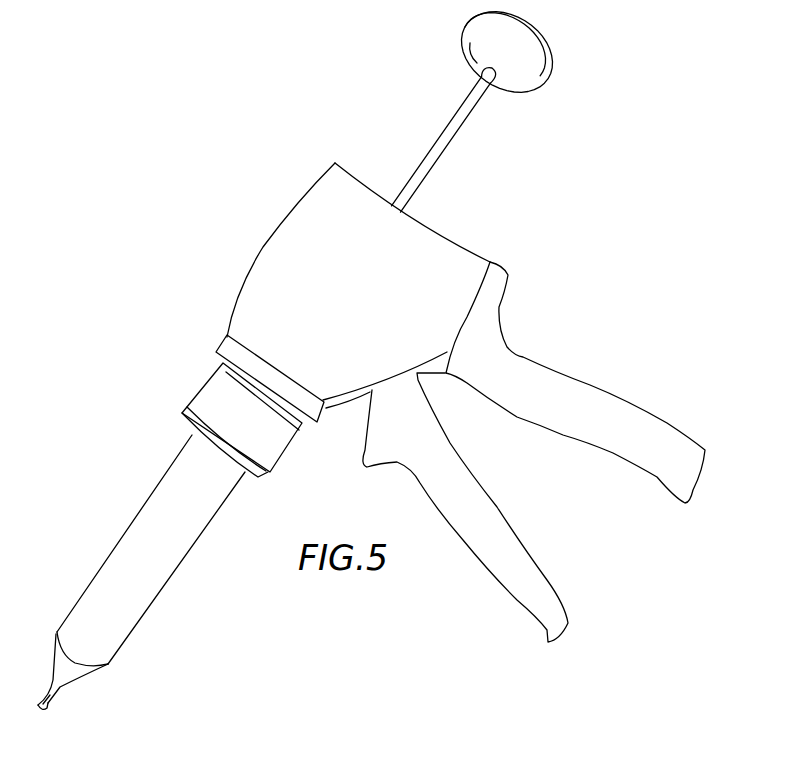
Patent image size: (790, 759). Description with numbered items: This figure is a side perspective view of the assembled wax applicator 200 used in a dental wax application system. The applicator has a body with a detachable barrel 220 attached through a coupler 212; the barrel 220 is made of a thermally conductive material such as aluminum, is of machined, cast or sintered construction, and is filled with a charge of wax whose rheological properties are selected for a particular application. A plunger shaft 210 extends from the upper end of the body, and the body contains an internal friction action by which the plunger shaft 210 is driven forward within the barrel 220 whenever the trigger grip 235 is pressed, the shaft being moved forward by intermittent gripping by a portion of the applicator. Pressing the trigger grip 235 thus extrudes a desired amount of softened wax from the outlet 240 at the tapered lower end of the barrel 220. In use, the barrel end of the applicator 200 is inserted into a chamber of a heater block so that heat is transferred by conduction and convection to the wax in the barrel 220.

The wax applicator 200 is at (262, 199).
The plunger shaft 210 is at (450, 127).
The coupler 212 is at (207, 383).
The barrel 220 is at (190, 590).
The trigger grip 235 is at (475, 590).
The outlet 240 is at (55, 697).